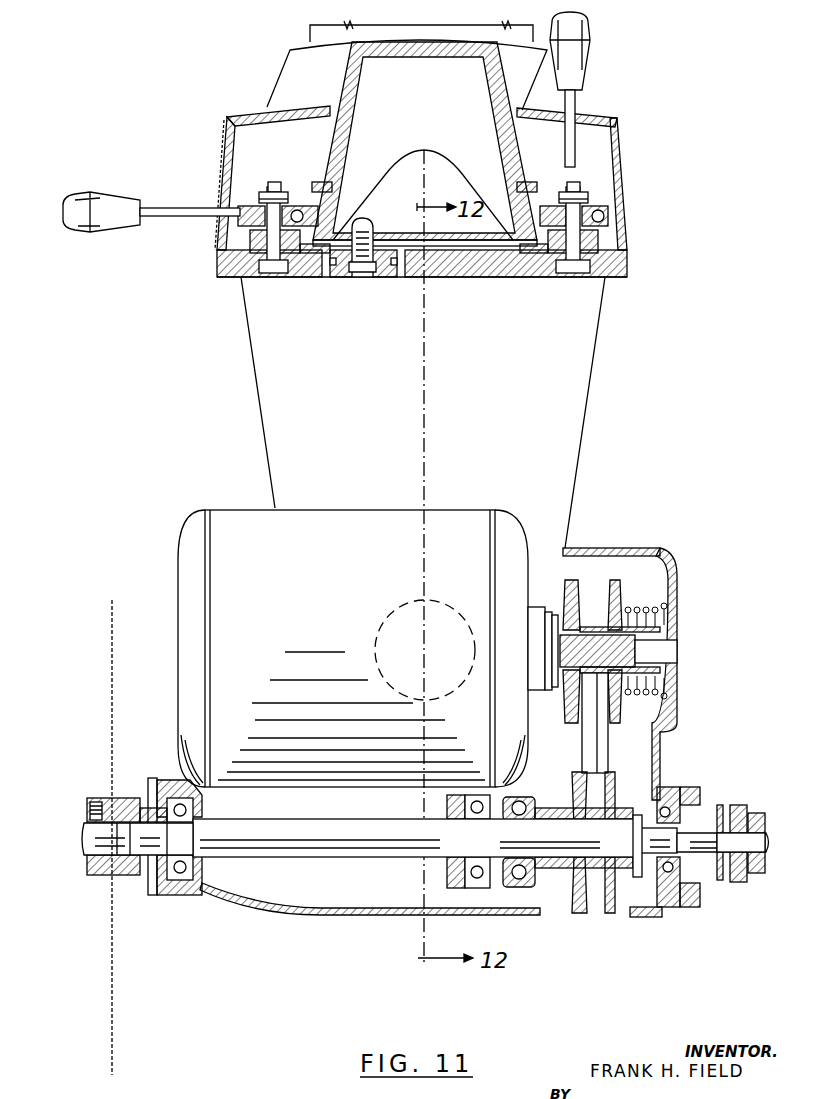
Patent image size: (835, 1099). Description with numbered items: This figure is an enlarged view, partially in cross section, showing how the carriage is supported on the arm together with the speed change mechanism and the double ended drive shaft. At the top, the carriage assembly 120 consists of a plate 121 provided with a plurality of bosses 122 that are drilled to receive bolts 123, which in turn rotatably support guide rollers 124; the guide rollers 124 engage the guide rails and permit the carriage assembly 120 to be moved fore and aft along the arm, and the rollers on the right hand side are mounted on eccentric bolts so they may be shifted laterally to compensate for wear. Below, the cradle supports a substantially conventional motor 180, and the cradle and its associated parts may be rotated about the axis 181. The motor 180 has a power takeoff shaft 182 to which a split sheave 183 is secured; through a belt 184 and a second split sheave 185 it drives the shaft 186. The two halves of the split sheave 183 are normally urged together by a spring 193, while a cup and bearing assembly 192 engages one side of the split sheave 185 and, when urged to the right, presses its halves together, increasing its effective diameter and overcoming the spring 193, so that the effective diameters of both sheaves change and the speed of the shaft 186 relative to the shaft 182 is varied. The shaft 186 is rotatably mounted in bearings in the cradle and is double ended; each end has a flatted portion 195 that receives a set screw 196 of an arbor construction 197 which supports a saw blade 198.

The carriage assembly 120 is at (497, 278).
The plate 121 is at (236, 278).
The bosses 122 is at (250, 239).
The bolts 123 is at (277, 182).
The guide rollers 124 is at (249, 204).
The motor 180 is at (352, 590).
The axis 181 is at (464, 649).
The power takeoff shaft 182 is at (637, 648).
The split sheave 183 is at (578, 594).
The belt 184 is at (608, 744).
The second split sheave 185 is at (612, 793).
The shaft 186 is at (385, 819).
The cup and bearing assembly 192 is at (520, 796).
The spring 193 is at (635, 602).
The flatted portion 195 is at (110, 828).
The set screw 196 is at (100, 797).
The arbor construction 197 is at (127, 797).
The saw blade 198 is at (113, 667).